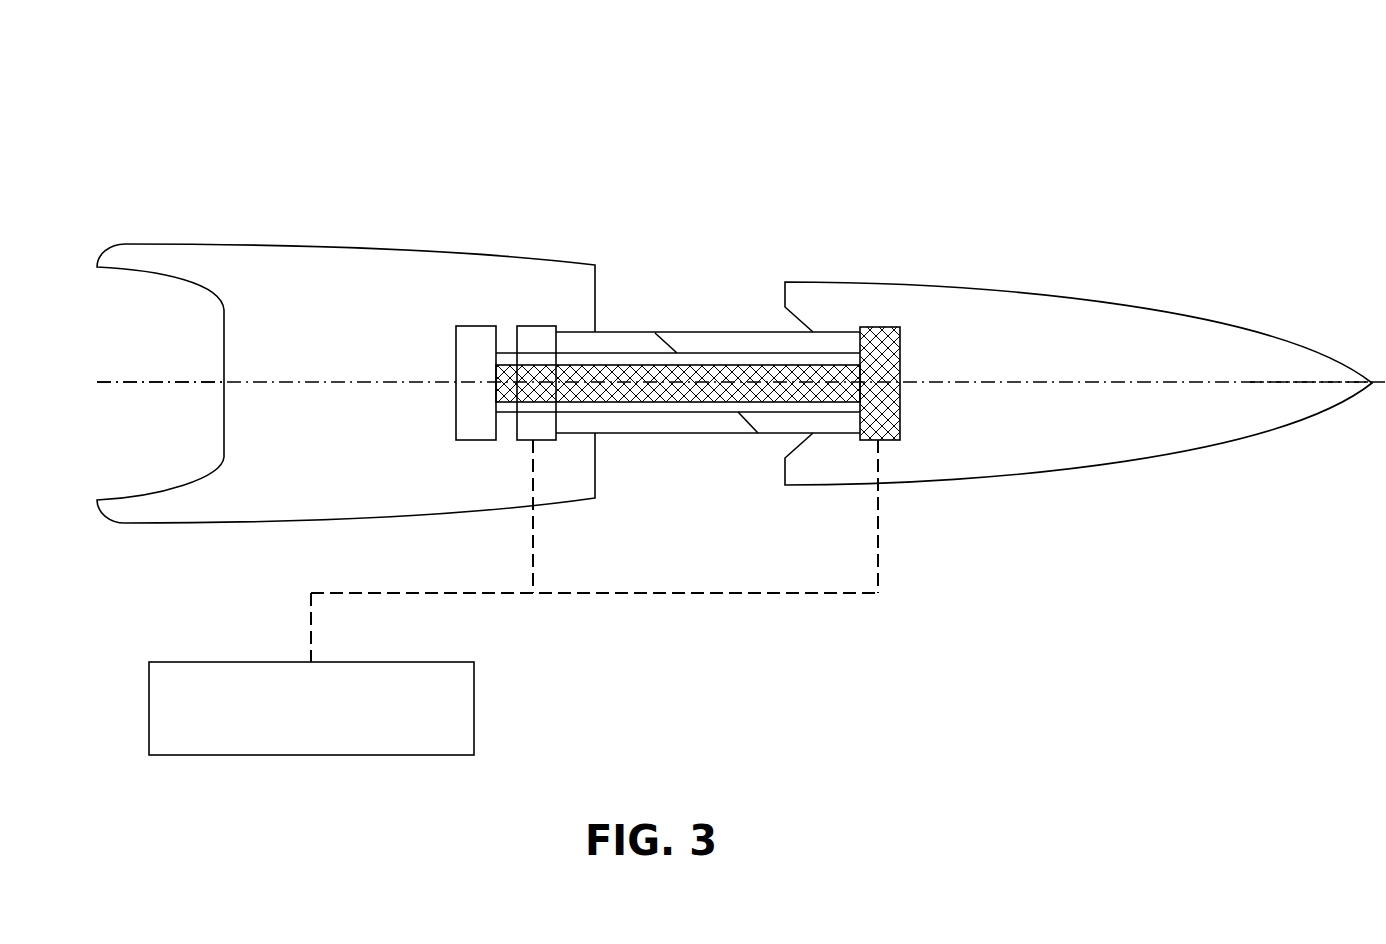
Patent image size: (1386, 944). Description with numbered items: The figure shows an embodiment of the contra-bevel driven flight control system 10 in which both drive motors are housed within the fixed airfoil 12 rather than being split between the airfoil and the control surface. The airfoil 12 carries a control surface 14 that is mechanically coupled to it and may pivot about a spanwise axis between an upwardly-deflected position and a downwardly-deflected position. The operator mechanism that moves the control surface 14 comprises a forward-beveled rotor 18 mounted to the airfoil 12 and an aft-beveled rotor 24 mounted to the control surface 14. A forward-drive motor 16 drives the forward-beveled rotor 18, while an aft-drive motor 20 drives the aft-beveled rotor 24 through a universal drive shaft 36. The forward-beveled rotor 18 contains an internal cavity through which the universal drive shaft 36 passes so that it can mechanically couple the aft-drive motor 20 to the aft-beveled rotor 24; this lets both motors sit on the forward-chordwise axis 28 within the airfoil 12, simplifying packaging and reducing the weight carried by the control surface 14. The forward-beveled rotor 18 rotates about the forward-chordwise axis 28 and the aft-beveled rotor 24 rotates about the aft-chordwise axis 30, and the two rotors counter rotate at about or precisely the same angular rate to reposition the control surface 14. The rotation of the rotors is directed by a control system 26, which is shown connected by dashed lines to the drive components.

The contra-bevel driven flight control system 10 is at (741, 414).
The airfoil 12 is at (346, 383).
The control surface 14 is at (1078, 383).
The forward-drive motor 16 is at (523, 352).
The forward-beveled rotor 18 is at (600, 332).
The aft-drive motor 20 is at (456, 330).
The aft-beveled rotor 24 is at (778, 433).
The control system 26 is at (513, 597).
The forward-chordwise axis 28 is at (167, 381).
The aft-chordwise axis 30 is at (1285, 383).
The universal drive shaft 36 is at (878, 328).